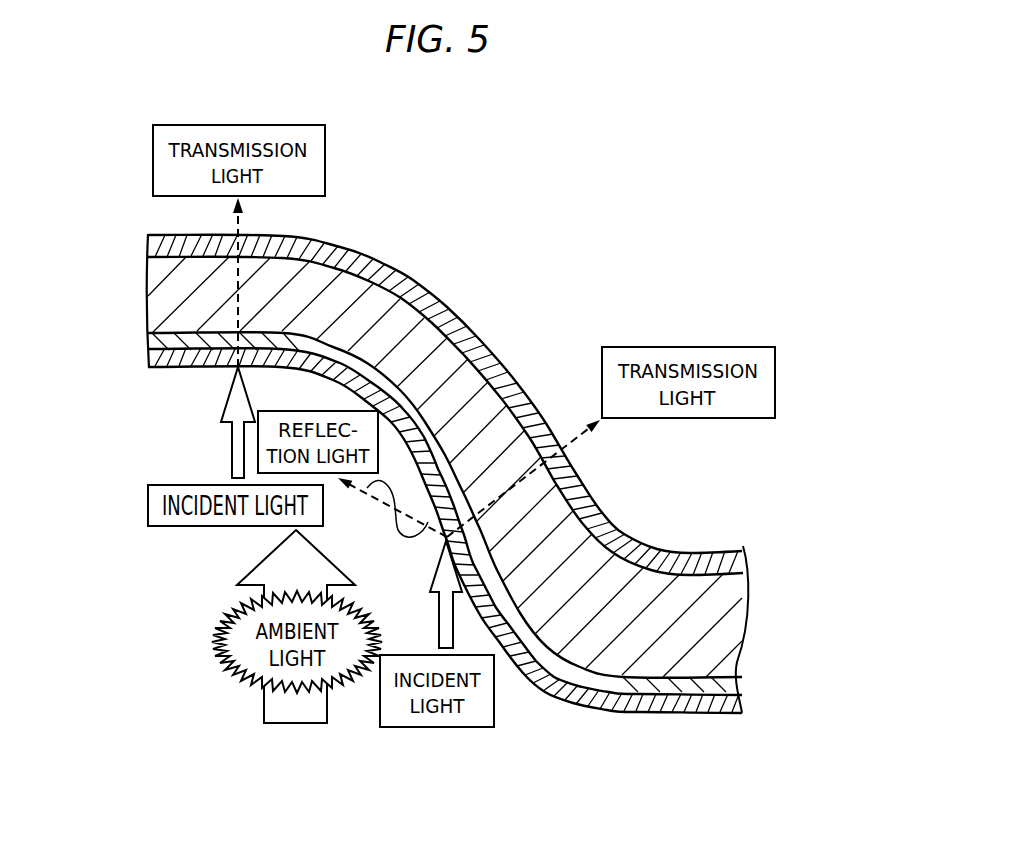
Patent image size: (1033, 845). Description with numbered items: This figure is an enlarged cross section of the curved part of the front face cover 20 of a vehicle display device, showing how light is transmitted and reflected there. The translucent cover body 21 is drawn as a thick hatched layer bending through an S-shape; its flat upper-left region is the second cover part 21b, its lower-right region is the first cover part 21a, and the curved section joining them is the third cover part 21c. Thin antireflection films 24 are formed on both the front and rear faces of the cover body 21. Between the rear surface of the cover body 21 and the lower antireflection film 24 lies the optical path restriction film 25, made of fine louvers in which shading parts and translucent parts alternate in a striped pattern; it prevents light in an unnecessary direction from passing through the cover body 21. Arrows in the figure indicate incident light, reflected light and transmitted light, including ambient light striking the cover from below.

The front face cover 20 is at (588, 722).
The cover body 21 is at (757, 588).
The first cover part 21a is at (722, 638).
The second cover part 21b is at (175, 305).
The third cover part 21c is at (507, 347).
The antireflection film 24 is at (690, 545).
The optical path restriction film 25 is at (648, 692).